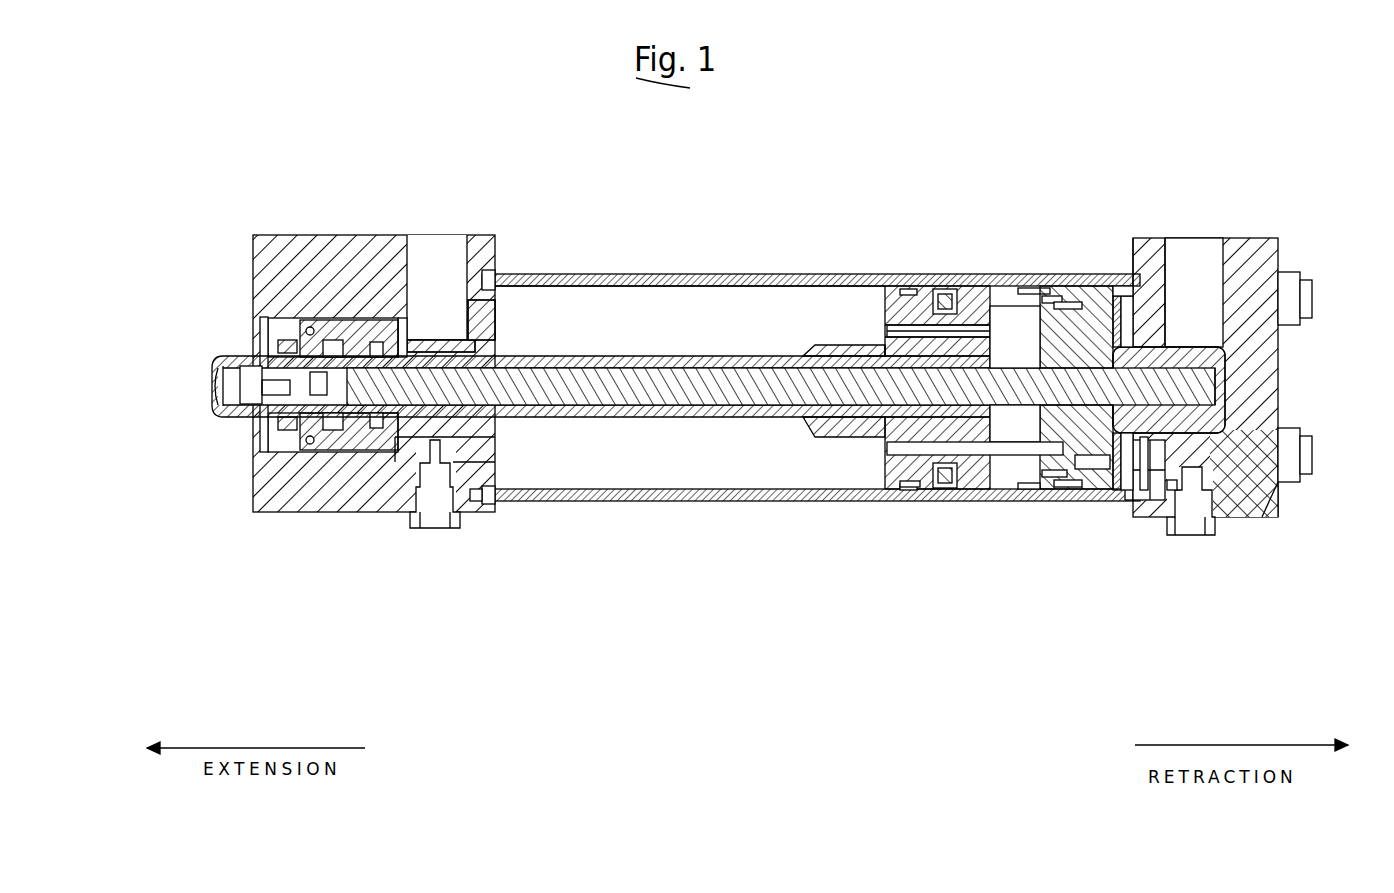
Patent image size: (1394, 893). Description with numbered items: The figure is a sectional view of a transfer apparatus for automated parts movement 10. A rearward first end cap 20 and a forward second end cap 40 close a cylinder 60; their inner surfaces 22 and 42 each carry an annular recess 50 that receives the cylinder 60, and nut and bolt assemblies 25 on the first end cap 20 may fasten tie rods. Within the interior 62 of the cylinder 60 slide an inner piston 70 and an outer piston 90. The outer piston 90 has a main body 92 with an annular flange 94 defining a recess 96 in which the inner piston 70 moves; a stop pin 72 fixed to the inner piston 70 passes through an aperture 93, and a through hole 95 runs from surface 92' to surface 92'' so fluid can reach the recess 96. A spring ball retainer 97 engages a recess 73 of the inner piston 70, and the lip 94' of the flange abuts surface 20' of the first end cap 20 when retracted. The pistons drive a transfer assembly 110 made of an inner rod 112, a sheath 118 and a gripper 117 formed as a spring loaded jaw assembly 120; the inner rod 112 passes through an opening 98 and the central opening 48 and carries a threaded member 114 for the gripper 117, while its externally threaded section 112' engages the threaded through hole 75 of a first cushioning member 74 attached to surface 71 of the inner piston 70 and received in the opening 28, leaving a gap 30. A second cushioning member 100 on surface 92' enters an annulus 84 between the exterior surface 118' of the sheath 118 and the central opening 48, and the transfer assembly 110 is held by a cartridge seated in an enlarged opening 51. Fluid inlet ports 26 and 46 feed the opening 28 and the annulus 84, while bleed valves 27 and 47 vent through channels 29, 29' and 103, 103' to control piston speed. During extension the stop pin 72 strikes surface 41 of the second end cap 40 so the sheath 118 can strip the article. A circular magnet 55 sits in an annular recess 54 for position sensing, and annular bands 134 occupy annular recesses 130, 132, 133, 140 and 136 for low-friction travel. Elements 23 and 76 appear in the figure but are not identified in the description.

The transfer apparatus for automated parts movement 10 is at (428, 113).
The first end cap 20 is at (1205, 348).
The surface of first end cap 20' is at (1198, 536).
The inner surface of first end cap 22 is at (1130, 240).
The cap end bolt 23 is at (1313, 298).
The nut and bolt assemblies 25 is at (1313, 457).
The fluid inlet port 26 is at (1197, 262).
The bleed valve 27 is at (1200, 512).
The opening 28 is at (1220, 360).
The channel 29 is at (1294, 515).
The channel 29' is at (1203, 531).
The gap 30 is at (1285, 478).
The second end cap 40 is at (320, 245).
The surface of second end cap 41 is at (497, 305).
The inner surface of second end cap 42 is at (497, 243).
The inlet port 46 is at (432, 248).
The bleed valve 47 is at (432, 528).
The central opening 48 is at (404, 330).
The annular recess 50 is at (476, 502).
The enlarged opening 51 is at (265, 460).
The annular recess 54 is at (938, 490).
The circular magnet 55 is at (950, 502).
The cylinder 60 is at (770, 502).
The interior of cylinder 62 is at (621, 290).
The inner piston 70 is at (1010, 300).
The surface of inner piston 71 is at (1088, 477).
The stop pin 72 is at (1040, 470).
The recess 73 is at (1108, 300).
The first cushioning member 74 is at (1160, 340).
The internally threaded through hole 75 is at (1282, 484).
The nut head 76 is at (1260, 522).
The annulus 84 is at (462, 342).
The outer piston 90 is at (884, 310).
The main body 92 is at (916, 238).
The surface of main body 92' is at (871, 272).
The surface of main body 92'' is at (988, 260).
The aperture 93 is at (893, 470).
The annular flange 94 is at (1061, 267).
The lip 94' is at (1170, 541).
The through hole 95 is at (885, 331).
The recess 96 is at (1005, 472).
The spring ball retainer 97 is at (1065, 300).
The opening 98 is at (880, 402).
The second cushioning member 100 is at (812, 350).
The channel 103 is at (339, 544).
The channel 103' is at (534, 556).
The transfer assembly 110 is at (615, 435).
The inner rod 112 is at (781, 484).
The externally threaded section 112' is at (1293, 394).
The threaded member 114 is at (318, 420).
The gripper 117 is at (205, 360).
The sheath 118 is at (606, 443).
The exterior surface of sheath 118' is at (601, 364).
The spring loaded jaw assembly 120 is at (255, 383).
The annular recess 130 is at (905, 300).
The annular recess 132 is at (1015, 280).
The annular recess 133 is at (880, 347).
The annular band 134 is at (105, 400).
The annular recess 136 is at (232, 426).
The annular recess 140 is at (1015, 423).